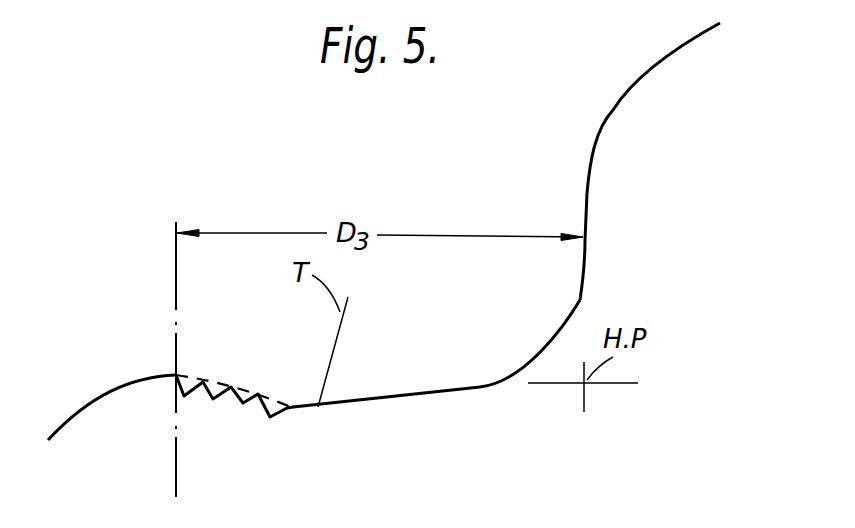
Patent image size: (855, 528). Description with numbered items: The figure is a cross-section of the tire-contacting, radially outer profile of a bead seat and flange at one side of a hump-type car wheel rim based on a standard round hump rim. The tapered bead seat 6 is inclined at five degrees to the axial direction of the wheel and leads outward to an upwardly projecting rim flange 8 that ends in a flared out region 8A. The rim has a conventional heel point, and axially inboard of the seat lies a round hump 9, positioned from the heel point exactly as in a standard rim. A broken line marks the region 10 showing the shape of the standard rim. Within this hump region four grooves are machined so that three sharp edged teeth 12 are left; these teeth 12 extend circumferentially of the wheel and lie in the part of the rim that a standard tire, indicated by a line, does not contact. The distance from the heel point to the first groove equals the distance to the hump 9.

The tapered bead seat 6 is at (410, 398).
The rim flange 8 is at (588, 205).
The flared out region 8A is at (665, 58).
The round hump 9 is at (137, 380).
The region of the hump shown by broken line 10 is at (246, 386).
The sharp edged teeth 12 is at (223, 393).